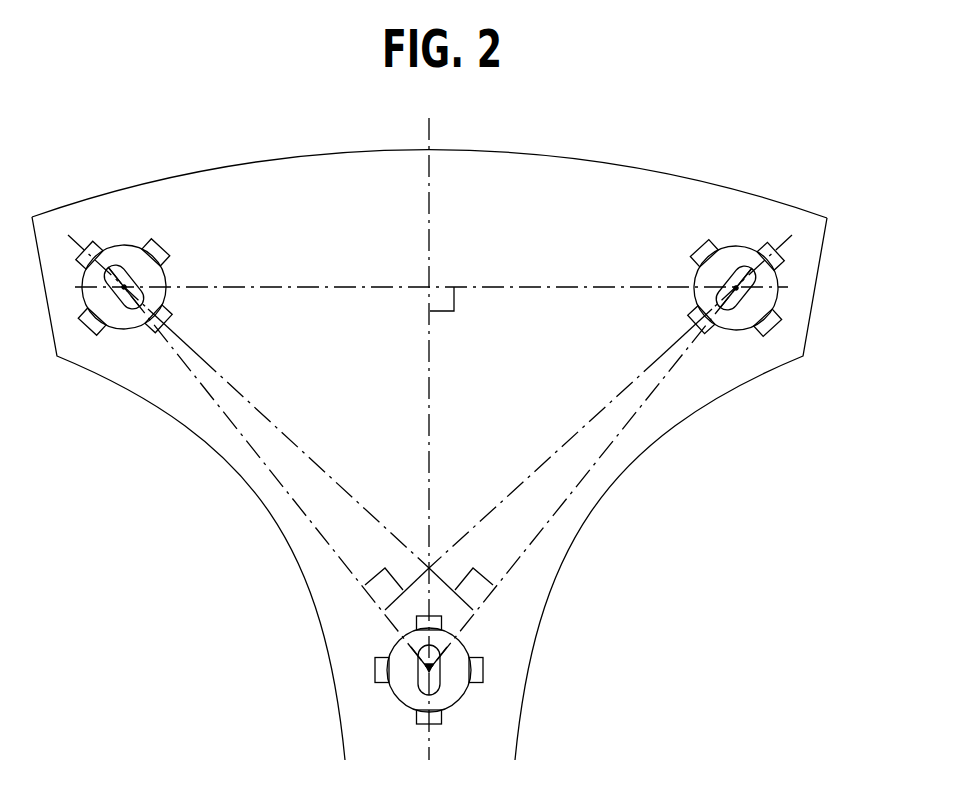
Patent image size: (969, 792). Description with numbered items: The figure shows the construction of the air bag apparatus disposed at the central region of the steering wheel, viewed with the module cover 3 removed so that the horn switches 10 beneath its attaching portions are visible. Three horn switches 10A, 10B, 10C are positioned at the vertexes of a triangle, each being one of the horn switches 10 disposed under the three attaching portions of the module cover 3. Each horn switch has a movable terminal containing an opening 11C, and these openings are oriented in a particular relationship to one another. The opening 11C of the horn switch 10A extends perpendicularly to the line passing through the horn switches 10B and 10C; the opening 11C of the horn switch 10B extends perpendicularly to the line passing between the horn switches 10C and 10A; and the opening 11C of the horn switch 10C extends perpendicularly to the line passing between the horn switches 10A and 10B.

The module cover 3 is at (120, 218).
The horn switches 10 is at (443, 415).
The horn switch 10A is at (155, 231).
The horn switch 10B is at (738, 240).
The horn switch 10C is at (469, 645).
The opening 11C is at (137, 283).